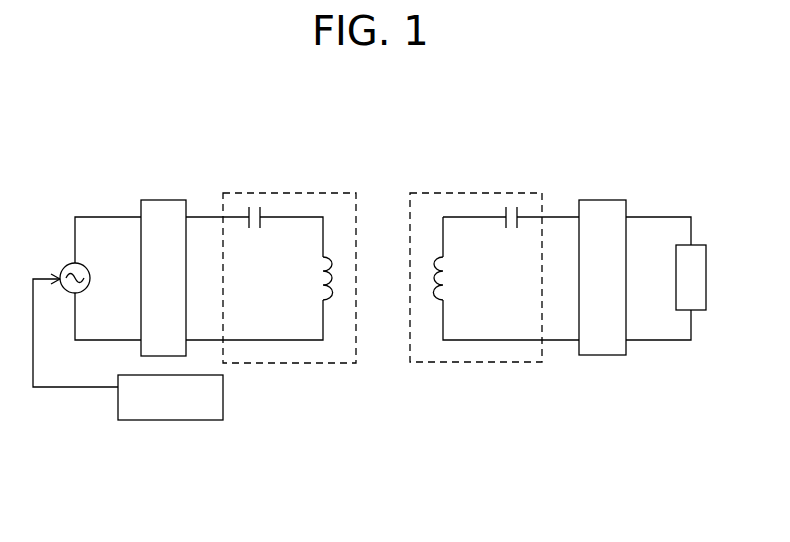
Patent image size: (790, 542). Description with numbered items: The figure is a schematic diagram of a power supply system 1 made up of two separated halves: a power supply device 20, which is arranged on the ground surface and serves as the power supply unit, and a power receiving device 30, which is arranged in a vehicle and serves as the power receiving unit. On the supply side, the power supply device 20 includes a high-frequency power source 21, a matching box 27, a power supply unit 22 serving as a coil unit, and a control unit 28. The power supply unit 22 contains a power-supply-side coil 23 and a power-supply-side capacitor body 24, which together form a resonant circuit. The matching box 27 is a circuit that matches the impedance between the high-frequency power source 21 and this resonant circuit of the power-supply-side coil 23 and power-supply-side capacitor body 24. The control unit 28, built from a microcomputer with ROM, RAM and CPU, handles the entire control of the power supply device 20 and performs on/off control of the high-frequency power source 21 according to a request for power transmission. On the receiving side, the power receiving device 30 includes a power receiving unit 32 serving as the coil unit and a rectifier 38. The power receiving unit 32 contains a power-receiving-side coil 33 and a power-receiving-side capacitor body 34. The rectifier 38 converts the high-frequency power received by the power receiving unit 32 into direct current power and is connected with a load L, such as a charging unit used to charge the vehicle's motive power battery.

The power supply system 1 is at (566, 118).
The power supply device 20 is at (210, 455).
The high-frequency power source 21 is at (68, 264).
The power supply unit 22 is at (304, 193).
The power-supply-side coil 23 is at (327, 257).
The power-supply-side capacitor body 24 is at (257, 207).
The matching box 27 is at (160, 200).
The control unit 28 is at (148, 420).
The power receiving device 30 is at (597, 385).
The power receiving unit 32 is at (478, 193).
The power-receiving-side coil 33 is at (435, 257).
The power-receiving-side capacitor body 34 is at (514, 207).
The rectifier 38 is at (597, 200).
The load L is at (708, 272).